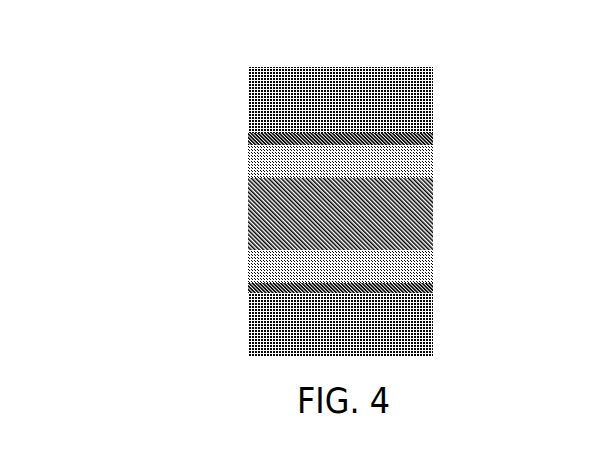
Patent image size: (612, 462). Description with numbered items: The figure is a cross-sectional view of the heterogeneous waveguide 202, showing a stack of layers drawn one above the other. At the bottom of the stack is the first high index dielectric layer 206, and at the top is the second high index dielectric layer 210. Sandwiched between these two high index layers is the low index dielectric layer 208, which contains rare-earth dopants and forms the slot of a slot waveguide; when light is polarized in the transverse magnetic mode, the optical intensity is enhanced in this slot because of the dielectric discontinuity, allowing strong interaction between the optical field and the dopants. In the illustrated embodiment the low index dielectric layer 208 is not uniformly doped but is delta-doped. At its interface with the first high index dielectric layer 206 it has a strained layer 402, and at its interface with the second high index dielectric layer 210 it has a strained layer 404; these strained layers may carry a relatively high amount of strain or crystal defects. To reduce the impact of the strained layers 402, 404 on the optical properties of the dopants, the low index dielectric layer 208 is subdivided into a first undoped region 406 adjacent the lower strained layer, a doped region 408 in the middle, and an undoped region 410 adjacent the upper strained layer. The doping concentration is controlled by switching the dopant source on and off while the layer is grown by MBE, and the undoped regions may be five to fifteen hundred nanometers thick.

The heterogeneous waveguide 202 is at (74, 90).
The low index dielectric layer 208 is at (506, 194).
The second high index dielectric layer 210 is at (257, 76).
The strained layer 404 is at (257, 138).
The undoped region 410 is at (418, 166).
The doped region 408 is at (425, 208).
The first undoped region 406 is at (420, 263).
The strained layer 402 is at (258, 287).
The first high index dielectric layer 206 is at (260, 318).